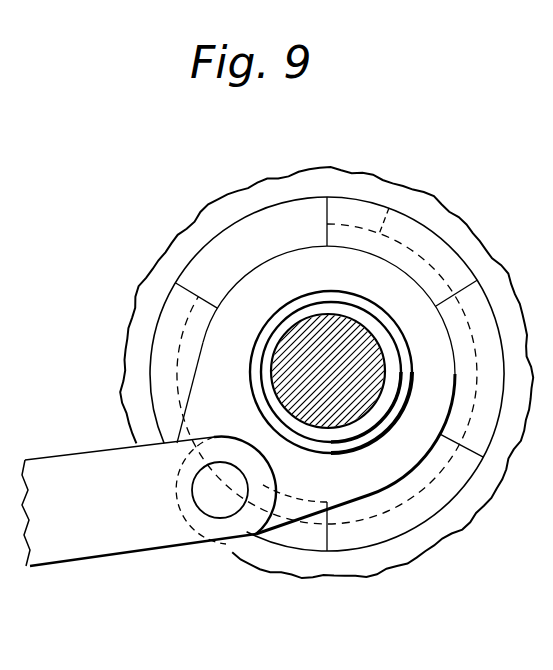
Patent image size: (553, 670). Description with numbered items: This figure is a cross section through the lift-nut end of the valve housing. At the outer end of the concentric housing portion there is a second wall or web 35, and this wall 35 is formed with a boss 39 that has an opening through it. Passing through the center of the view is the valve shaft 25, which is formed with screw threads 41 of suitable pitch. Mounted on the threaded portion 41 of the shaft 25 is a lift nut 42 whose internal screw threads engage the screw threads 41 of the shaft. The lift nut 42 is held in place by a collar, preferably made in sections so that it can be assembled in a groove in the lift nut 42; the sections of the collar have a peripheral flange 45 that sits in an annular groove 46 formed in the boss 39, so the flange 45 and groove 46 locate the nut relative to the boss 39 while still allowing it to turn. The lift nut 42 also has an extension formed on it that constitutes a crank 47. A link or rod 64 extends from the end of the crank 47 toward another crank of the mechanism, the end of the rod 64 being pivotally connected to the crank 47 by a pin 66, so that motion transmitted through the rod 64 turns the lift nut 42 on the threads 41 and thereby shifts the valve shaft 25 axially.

The valve shaft 25 is at (345, 333).
The second wall or web 35 is at (319, 184).
The boss 39 is at (235, 240).
The screw threads 41 is at (387, 405).
The lift nut 42 is at (430, 372).
The peripheral flange 45 is at (440, 248).
The annular groove 46 is at (389, 208).
The crank 47 is at (290, 508).
The link or rod 64 is at (130, 533).
The pin 66 is at (215, 517).